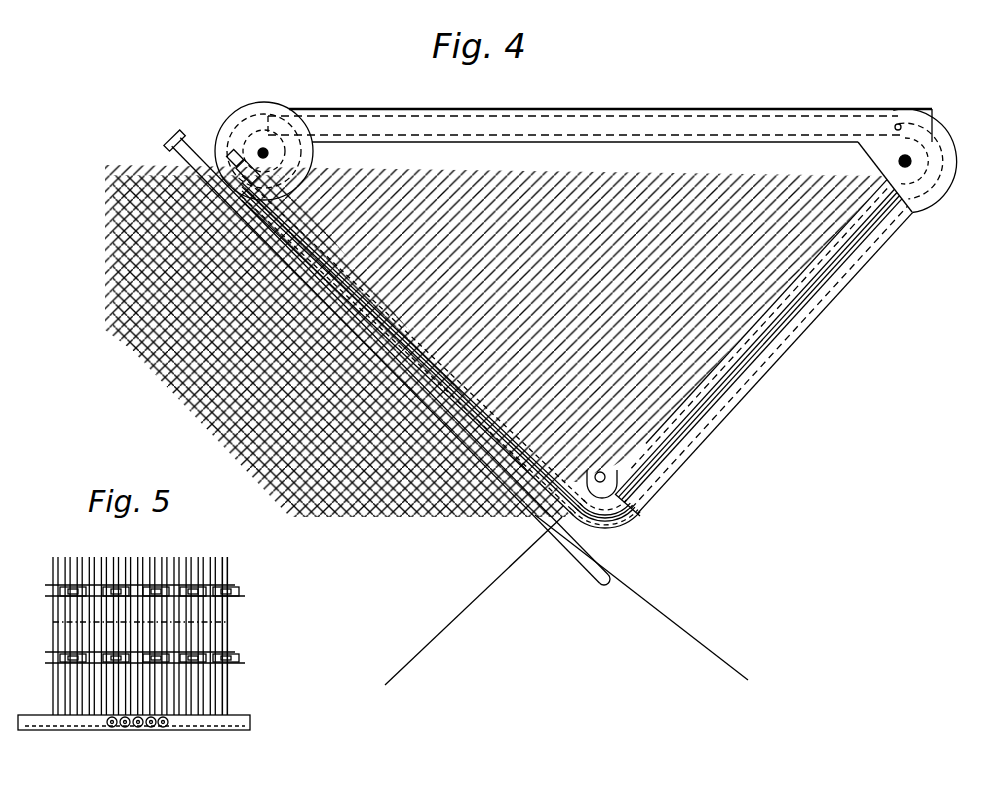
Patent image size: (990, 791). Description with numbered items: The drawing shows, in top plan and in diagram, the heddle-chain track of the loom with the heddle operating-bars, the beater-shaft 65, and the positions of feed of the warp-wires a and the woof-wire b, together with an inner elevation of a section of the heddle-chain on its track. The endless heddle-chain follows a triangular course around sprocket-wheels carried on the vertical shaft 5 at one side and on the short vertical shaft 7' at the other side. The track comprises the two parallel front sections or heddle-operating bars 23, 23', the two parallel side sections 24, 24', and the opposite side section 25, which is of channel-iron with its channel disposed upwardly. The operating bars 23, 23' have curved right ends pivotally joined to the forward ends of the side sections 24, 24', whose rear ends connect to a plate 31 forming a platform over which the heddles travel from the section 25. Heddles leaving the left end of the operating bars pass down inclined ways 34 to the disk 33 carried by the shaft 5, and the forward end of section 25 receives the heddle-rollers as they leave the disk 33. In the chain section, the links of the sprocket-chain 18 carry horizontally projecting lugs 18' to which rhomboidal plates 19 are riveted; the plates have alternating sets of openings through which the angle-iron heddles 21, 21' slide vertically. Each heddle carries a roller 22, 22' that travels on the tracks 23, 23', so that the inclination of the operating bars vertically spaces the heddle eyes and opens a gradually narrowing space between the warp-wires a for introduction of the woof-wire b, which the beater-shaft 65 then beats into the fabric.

In FIG. 4, the disk 33 is at (246, 133).
In FIG. 4, the inclined ways 34 is at (229, 162).
In FIG. 4, the vertical shaft 5 is at (268, 153).
In FIG. 4, the track section 25 is at (645, 106).
In FIG. 5, the track section 25 is at (232, 730).
In FIG. 4, the plate 31 is at (943, 207).
In FIG. 4, the side section 24 is at (764, 348).
In FIG. 4, the side section 24' is at (759, 345).
In FIG. 4, the heddle-operating bar 23 is at (443, 361).
In FIG. 4, the heddle-operating bar 23' is at (602, 472).
In FIG. 4, the vertical shaft 7' is at (640, 484).
In FIG. 4, the beater-shaft 65 is at (574, 552).
In FIG. 4, the warp-wires a is at (461, 617).
In FIG. 4, the woof-wire b is at (668, 598).
In FIG. 5, the horizontal plates 19 is at (56, 586).
In FIG. 5, the heddle 21 is at (143, 623).
In FIG. 5, the heddle 21' is at (242, 636).
In FIG. 5, the sprocket-chain 18 is at (165, 637).
In FIG. 5, the lugs 18' is at (153, 632).
In FIG. 5, the roller 22 is at (137, 739).
In FIG. 5, the roller 22' is at (142, 738).